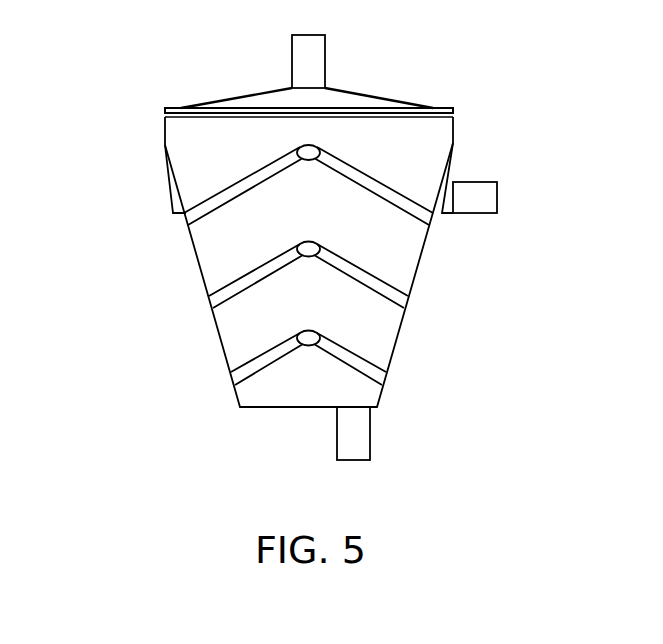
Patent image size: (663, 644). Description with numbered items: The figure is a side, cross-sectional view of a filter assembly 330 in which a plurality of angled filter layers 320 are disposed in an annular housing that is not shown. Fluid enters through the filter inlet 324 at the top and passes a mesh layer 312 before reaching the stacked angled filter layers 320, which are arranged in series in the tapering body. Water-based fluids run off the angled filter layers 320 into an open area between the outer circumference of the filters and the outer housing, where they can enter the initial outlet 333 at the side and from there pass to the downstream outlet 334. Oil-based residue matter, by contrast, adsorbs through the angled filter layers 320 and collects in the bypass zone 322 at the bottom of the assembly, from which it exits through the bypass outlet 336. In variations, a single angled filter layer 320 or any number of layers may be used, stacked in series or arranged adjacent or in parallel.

The filter assembly 330 is at (183, 76).
The mesh layer 312 is at (165, 110).
The filter inlet 324 is at (325, 63).
The angled filter layers 320 is at (205, 203).
The initial outlet 333 is at (213, 328).
The downstream outlet 334 is at (477, 214).
The bypass zone 322 is at (234, 394).
The bypass outlet 336 is at (372, 438).